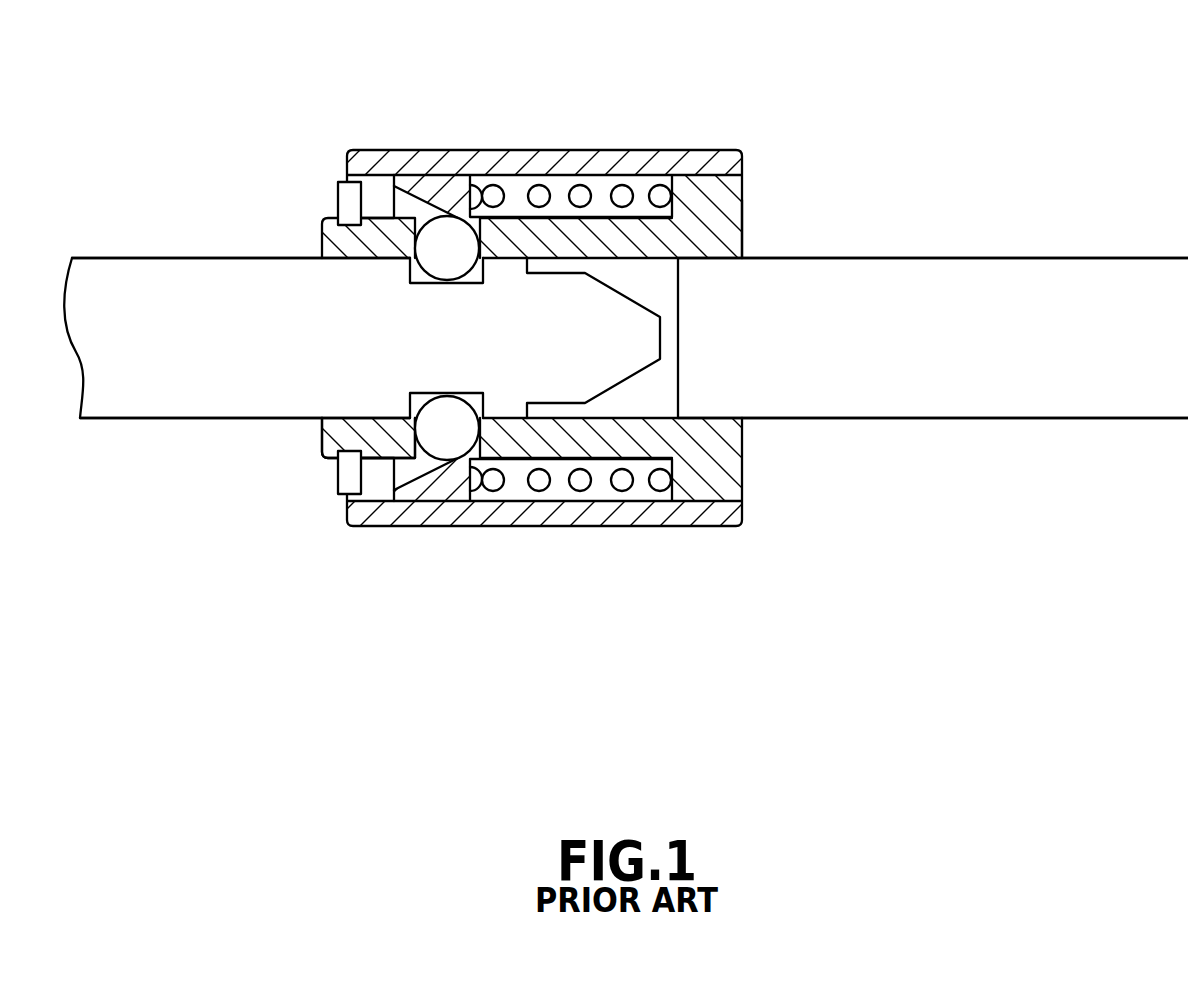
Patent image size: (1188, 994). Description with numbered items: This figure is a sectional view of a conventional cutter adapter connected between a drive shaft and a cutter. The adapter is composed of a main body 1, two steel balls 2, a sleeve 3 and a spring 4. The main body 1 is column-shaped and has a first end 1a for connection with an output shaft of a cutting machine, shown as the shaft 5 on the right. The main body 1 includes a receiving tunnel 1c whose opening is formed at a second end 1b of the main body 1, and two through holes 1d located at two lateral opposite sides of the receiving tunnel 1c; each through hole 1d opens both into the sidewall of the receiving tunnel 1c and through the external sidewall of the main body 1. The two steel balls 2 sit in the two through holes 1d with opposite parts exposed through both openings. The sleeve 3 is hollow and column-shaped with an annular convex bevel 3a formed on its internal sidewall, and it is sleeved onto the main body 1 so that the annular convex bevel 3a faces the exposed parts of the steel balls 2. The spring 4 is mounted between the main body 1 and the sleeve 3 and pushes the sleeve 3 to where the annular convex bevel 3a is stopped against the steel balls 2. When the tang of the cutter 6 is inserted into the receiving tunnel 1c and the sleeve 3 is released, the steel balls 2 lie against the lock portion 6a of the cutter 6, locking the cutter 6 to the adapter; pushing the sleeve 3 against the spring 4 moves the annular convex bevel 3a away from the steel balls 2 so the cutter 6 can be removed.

The main body 1 is at (710, 207).
The first end 1a is at (743, 225).
The second end 1b is at (322, 440).
The receiving tunnel 1c is at (327, 220).
The through holes 1d is at (412, 447).
The steel balls 2 is at (450, 243).
The sleeve 3 is at (657, 517).
The annular convex bevel 3a is at (428, 210).
The spring 4 is at (583, 195).
The shaft 5 is at (1033, 375).
The cutter 6 is at (170, 393).
The lock portion 6a is at (425, 283).